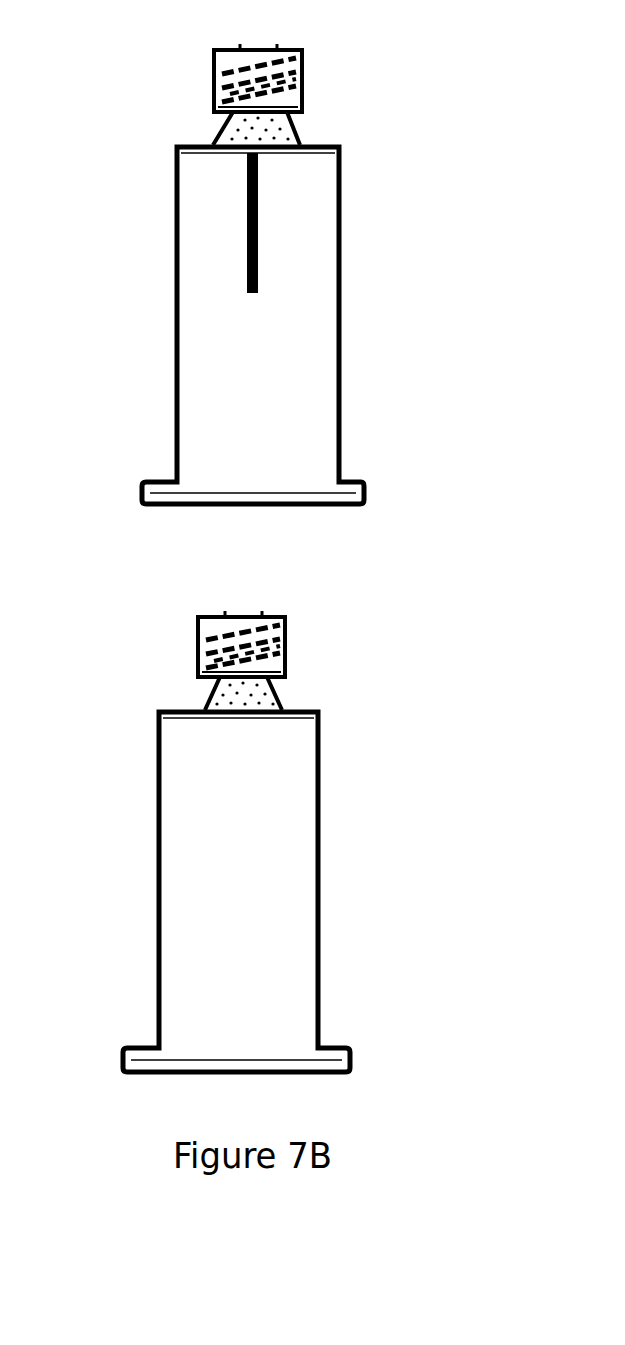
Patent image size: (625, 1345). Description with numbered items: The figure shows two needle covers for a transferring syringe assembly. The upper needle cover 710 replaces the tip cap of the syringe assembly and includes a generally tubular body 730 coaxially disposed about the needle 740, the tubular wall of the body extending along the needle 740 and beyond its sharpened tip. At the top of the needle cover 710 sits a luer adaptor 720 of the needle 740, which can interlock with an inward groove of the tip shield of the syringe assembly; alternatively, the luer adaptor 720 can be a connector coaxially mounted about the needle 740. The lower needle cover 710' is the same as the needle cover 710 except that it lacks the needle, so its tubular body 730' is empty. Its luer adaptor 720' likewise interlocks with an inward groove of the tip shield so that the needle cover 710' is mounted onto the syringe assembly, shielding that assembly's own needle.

The needle cover 710 is at (282, 259).
The luer adaptor 720 is at (194, 63).
The tubular body 730 is at (206, 325).
The needle 740 is at (263, 230).
The needle cover 710' is at (274, 832).
The luer adaptor 720' is at (172, 635).
The tubular body 730' is at (186, 892).